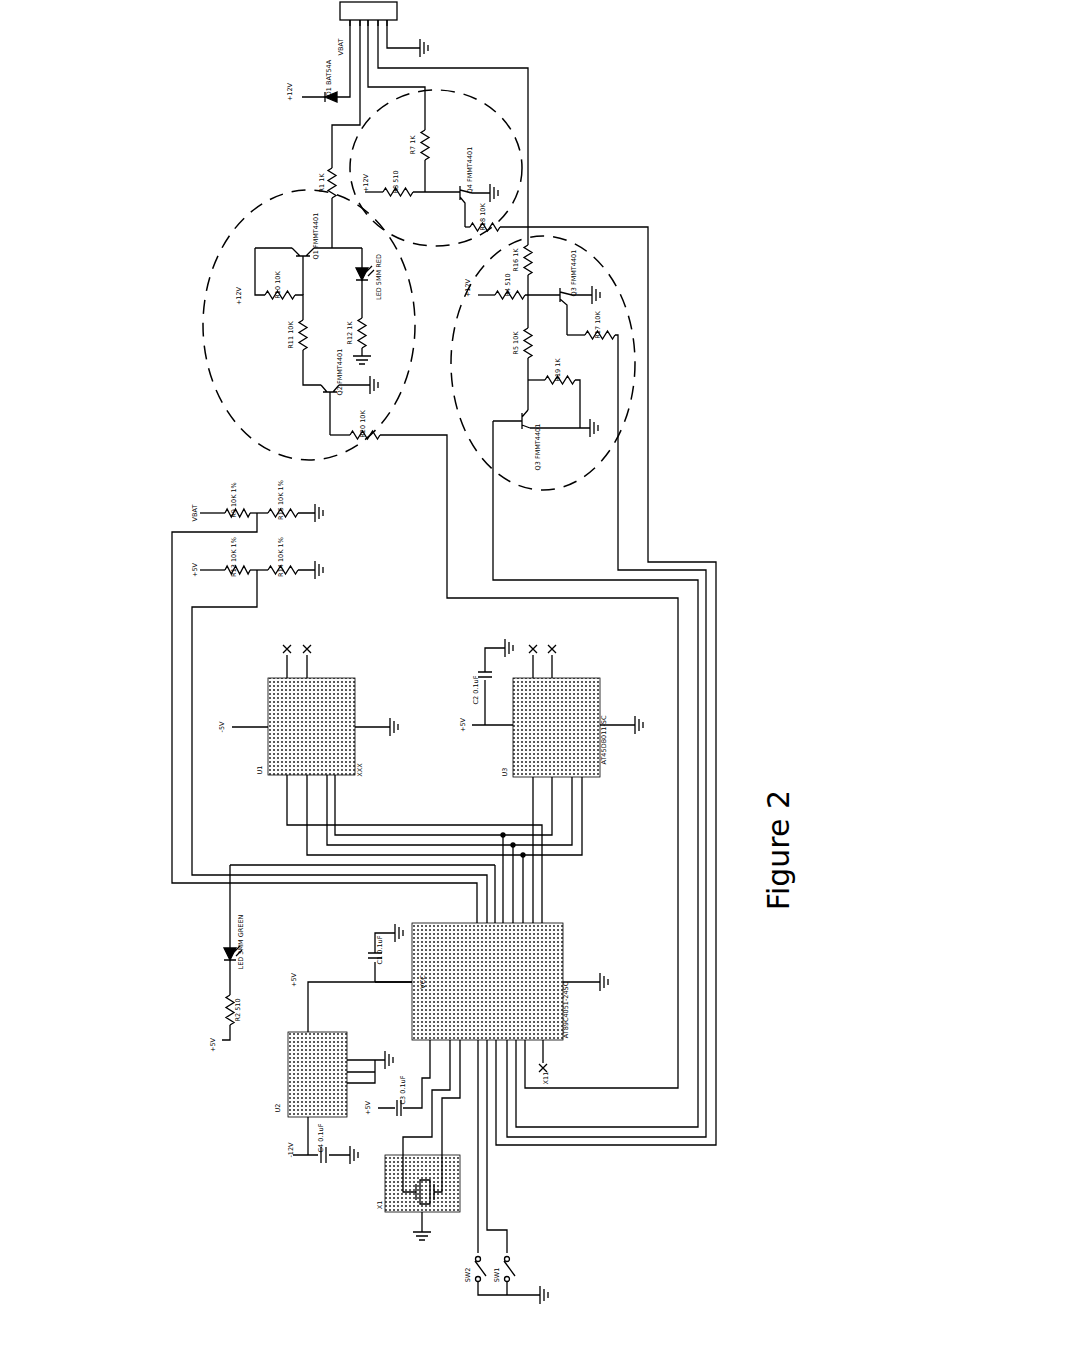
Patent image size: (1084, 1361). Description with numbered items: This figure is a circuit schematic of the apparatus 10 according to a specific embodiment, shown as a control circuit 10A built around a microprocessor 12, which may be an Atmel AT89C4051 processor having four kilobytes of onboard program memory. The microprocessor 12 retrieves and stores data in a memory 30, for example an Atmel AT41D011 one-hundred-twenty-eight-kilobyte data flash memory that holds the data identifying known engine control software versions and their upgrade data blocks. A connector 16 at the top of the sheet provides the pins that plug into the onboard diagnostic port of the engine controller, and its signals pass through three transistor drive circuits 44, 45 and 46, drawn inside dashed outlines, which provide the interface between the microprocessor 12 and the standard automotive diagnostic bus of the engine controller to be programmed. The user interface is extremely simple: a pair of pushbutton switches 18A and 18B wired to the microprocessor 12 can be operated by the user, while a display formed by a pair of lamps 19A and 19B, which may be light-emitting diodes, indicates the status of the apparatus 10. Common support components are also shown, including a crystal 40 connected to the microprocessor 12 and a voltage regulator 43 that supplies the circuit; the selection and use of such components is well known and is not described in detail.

The apparatus 10 is at (780, 1027).
The control circuit 10A is at (178, 1041).
The processor 12 is at (557, 957).
The connector 16 is at (320, 12).
The switch 18A is at (520, 1263).
The switch 18B is at (463, 1263).
The lamp 19A is at (202, 955).
The lamp 19B is at (367, 283).
The memory 30 is at (587, 703).
The crystal 40 is at (393, 1213).
The voltage regulator 43 is at (290, 1055).
The transistor drive circuit 44 is at (204, 288).
The transistor drive circuit 45 is at (517, 162).
The transistor drive circuit 46 is at (638, 365).